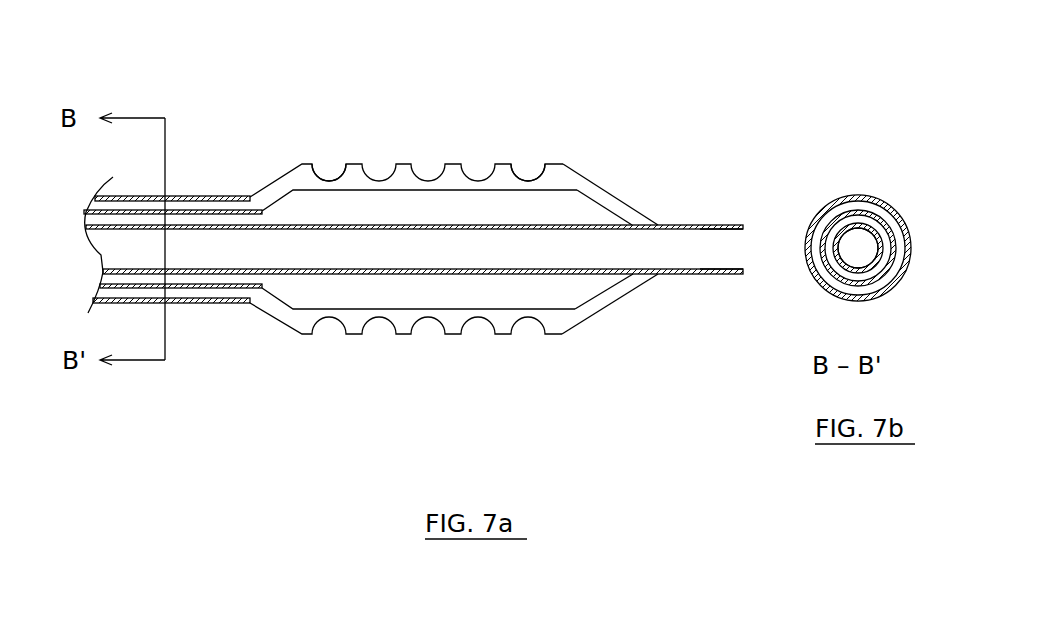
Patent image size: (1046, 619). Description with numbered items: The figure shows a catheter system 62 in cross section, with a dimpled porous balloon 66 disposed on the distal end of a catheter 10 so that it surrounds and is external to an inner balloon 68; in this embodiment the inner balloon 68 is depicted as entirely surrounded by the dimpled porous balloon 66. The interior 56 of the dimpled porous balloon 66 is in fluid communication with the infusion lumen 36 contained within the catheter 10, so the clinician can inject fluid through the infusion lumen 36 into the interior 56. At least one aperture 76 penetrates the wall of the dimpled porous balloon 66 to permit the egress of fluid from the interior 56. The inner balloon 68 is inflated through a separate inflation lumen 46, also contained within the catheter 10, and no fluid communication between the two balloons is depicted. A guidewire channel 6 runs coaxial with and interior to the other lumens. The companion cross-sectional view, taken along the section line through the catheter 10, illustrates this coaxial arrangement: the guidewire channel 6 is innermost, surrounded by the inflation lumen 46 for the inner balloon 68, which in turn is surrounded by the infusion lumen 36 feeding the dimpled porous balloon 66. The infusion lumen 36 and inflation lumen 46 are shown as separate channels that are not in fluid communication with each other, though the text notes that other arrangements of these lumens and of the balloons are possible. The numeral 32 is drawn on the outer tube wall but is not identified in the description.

In FIG. 7A, the guidewire channel 6 is at (732, 247).
In FIG. 7B, the guidewire channel 6 is at (865, 255).
In FIG. 7A, the catheter 10 is at (130, 190).
In FIG. 7B, the catheter 10 is at (837, 193).
In FIG. 7A, the outer tube 32 is at (200, 197).
In FIG. 7A, the infusion lumen 36 is at (583, 290).
In FIG. 7B, the infusion lumen 36 is at (852, 207).
In FIG. 7A, the inflation lumen 46 is at (205, 273).
In FIG. 7B, the inflation lumen 46 is at (874, 223).
In FIG. 7A, the interior of the dimpled porous balloon 56 is at (508, 178).
In FIG. 7A, the catheter system 62 is at (175, 83).
In FIG. 7A, the dimpled porous balloon 66 is at (567, 175).
In FIG. 7A, the inner balloon 68 is at (602, 208).
In FIG. 7A, the aperture 76 is at (332, 180).